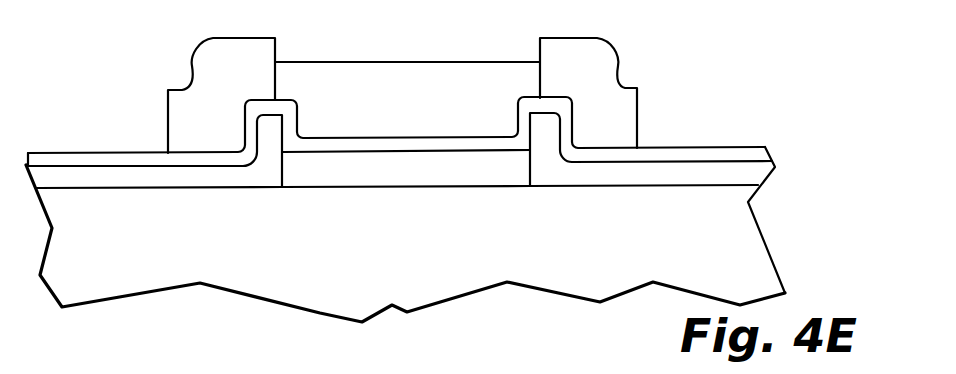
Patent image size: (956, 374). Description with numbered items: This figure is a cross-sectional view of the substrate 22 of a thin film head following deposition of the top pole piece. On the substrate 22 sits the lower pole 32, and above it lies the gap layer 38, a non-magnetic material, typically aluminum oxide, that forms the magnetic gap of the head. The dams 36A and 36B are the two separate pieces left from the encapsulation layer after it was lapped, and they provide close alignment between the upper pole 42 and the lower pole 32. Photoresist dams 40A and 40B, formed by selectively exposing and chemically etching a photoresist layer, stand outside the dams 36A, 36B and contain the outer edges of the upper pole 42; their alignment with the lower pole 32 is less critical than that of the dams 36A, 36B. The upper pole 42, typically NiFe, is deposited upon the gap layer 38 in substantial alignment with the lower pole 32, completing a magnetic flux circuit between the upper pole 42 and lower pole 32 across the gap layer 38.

The substrate 22 is at (740, 243).
The lower pole 32 is at (400, 167).
The dam 36A is at (143, 180).
The dam 36B is at (648, 173).
The gap layer 38 is at (727, 153).
The photoresist dam 40A is at (205, 70).
The photoresist dam 40B is at (588, 53).
The upper pole 42 is at (318, 75).